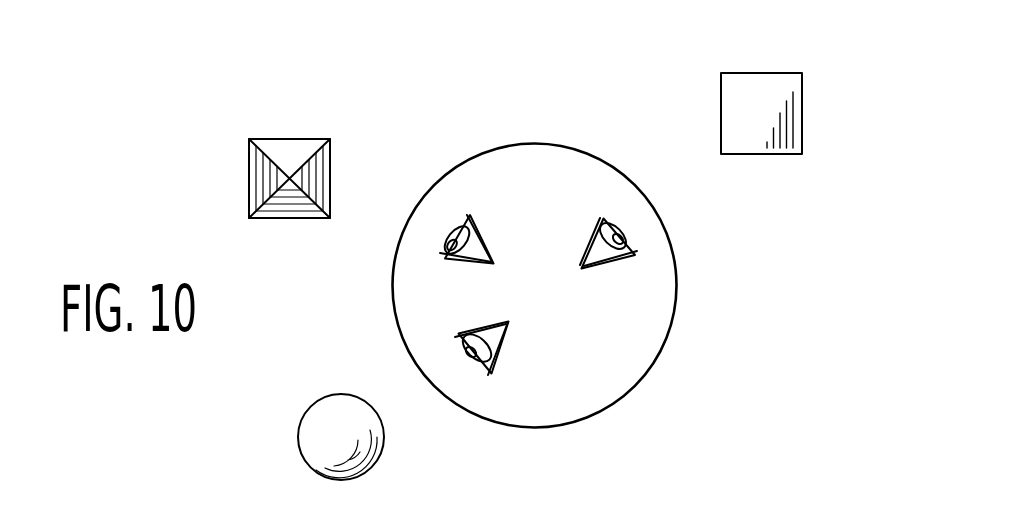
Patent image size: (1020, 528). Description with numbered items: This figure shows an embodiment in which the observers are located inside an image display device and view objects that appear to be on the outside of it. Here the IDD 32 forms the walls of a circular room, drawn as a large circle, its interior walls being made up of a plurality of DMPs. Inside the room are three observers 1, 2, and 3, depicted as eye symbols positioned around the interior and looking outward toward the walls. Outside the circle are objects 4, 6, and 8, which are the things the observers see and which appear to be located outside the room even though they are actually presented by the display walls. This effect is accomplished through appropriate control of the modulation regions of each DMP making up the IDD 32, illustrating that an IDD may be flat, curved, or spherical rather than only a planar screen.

The observer 1 is at (486, 239).
The observer 2 is at (605, 269).
The observer 3 is at (498, 360).
The object 4 is at (802, 110).
The object 6 is at (249, 171).
The object 8 is at (298, 423).
The IDD 32 is at (682, 266).